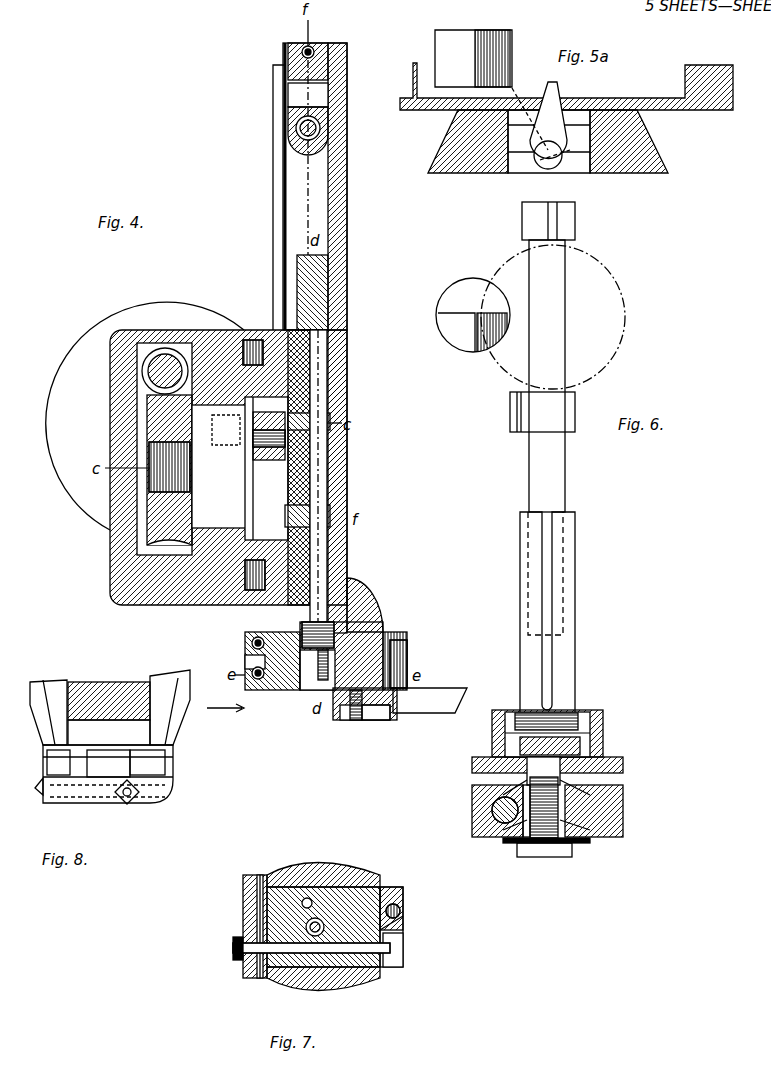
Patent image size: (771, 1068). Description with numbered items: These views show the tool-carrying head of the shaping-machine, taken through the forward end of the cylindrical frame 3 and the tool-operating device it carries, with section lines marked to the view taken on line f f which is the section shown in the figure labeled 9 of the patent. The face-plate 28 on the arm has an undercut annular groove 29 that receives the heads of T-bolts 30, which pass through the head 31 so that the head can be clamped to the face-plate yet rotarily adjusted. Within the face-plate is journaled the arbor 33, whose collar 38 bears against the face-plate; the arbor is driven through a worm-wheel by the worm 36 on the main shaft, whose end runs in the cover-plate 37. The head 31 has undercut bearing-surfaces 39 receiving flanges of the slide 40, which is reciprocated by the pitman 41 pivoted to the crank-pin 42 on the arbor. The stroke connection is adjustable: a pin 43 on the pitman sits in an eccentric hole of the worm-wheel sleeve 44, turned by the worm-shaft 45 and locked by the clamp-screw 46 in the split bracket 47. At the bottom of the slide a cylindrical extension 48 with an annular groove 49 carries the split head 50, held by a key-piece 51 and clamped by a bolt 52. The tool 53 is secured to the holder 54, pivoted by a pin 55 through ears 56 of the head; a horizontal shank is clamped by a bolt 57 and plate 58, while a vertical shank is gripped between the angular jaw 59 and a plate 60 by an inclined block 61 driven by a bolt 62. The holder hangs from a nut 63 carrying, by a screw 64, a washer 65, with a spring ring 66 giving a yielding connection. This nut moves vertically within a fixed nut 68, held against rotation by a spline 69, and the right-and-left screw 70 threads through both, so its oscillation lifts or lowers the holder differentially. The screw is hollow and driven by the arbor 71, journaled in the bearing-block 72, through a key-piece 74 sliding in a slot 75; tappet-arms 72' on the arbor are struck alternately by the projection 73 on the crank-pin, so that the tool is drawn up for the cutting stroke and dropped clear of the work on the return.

In FIG. 4, the cylindrical frame 3 is at (145, 416).
In FIG. 4, the screw 9 is at (252, 643).
In FIG. 4, the face-plate 28 is at (217, 385).
In FIG. 4, the annular undercut groove 29 is at (237, 352).
In FIG. 4, the T-bolts 30 is at (164, 449).
In FIG. 4, the head 31 is at (315, 333).
In FIG. 5A, the head 31 is at (700, 100).
In FIG. 8, the head 31 is at (109, 701).
In FIG. 4, the arbor 33 is at (222, 466).
In FIG. 4, the worm 36 is at (169, 483).
In FIG. 4, the cover-plate 37 is at (228, 467).
In FIG. 4, the collar 38 is at (250, 467).
In FIG. 5A, the undercut bearing-surfaces 39 is at (548, 141).
In FIG. 4, the slide 40 is at (347, 195).
In FIG. 8, the slide 40 is at (175, 712).
In FIG. 4, the pitman 41 is at (272, 185).
In FIG. 4, the crank-pin 42 is at (269, 436).
In FIG. 5A, the crank-pin 42 is at (502, 99).
In FIG. 6, the crank-pin 42 is at (473, 315).
In FIG. 4, the pin 43 is at (308, 95).
In FIG. 4, the worm-wheel sleeve 44 is at (328, 66).
In FIG. 4, the worm-shaft 45 is at (308, 157).
In FIG. 4, the clamp-screw 46 is at (319, 39).
In FIG. 4, the bracket 47 is at (320, 128).
In FIG. 4, the cylindrical extension 48 is at (365, 600).
In FIG. 4, the annular groove 49 is at (395, 632).
In FIG. 4, the head 50 is at (407, 657).
In FIG. 7, the head 50 is at (350, 985).
In FIG. 4, the key-piece 51 is at (258, 632).
In FIG. 8, the key-piece 51 is at (108, 763).
In FIG. 7, the key-piece 51 is at (243, 920).
In FIG. 4, the bolt 52 is at (245, 660).
In FIG. 8, the bolt 52 is at (32, 795).
In FIG. 4, the tool 53 is at (440, 713).
In FIG. 4, the holder 54 is at (280, 690).
In FIG. 7, the holder 54 is at (354, 913).
In FIG. 4, the pin 55 is at (254, 677).
In FIG. 7, the pin 55 is at (262, 875).
In FIG. 8, the ears 56 is at (155, 800).
In FIG. 7, the ears 56 is at (243, 880).
In FIG. 4, the bolt 57 is at (356, 720).
In FIG. 4, the plate 58 is at (385, 720).
In FIG. 7, the angular jaw 59 is at (403, 900).
In FIG. 7, the plate 60 is at (403, 925).
In FIG. 6, the inclined block 61 is at (510, 838).
In FIG. 7, the inclined block 61 is at (395, 950).
In FIG. 6, the bolt 62 is at (495, 815).
In FIG. 8, the bolt 62 is at (127, 804).
In FIG. 7, the bolt 62 is at (311, 963).
In FIG. 4, the nut 63 is at (340, 630).
In FIG. 6, the nut 63 is at (580, 783).
In FIG. 7, the nut 63 is at (309, 905).
In FIG. 6, the screw 64 is at (545, 857).
In FIG. 7, the screw 64 is at (327, 931).
In FIG. 6, the washer 65 is at (585, 843).
In FIG. 6, the spring ring 66 is at (594, 811).
In FIG. 4, the nut 68 is at (302, 628).
In FIG. 6, the nut 68 is at (590, 735).
In FIG. 6, the spline 69 is at (590, 748).
In FIG. 4, the screw 70 is at (265, 580).
In FIG. 6, the screw 70 is at (562, 672).
In FIG. 8, the screw 70 is at (109, 732).
In FIG. 4, the arbor 71 is at (327, 545).
In FIG. 6, the arbor 71 is at (548, 475).
In FIG. 4, the bearing-block 72 is at (355, 467).
In FIG. 4, the tappet-arms 72' is at (307, 470).
In FIG. 6, the tappet-arms 72' is at (542, 317).
In FIG. 4, the projection 73 is at (266, 468).
In FIG. 5A, the projection 73 is at (461, 65).
In FIG. 6, the projection 73 is at (462, 337).
In FIG. 4, the key-piece 74 is at (327, 600).
In FIG. 6, the key-piece 74 is at (548, 607).
In FIG. 6, the slot 75 is at (548, 553).